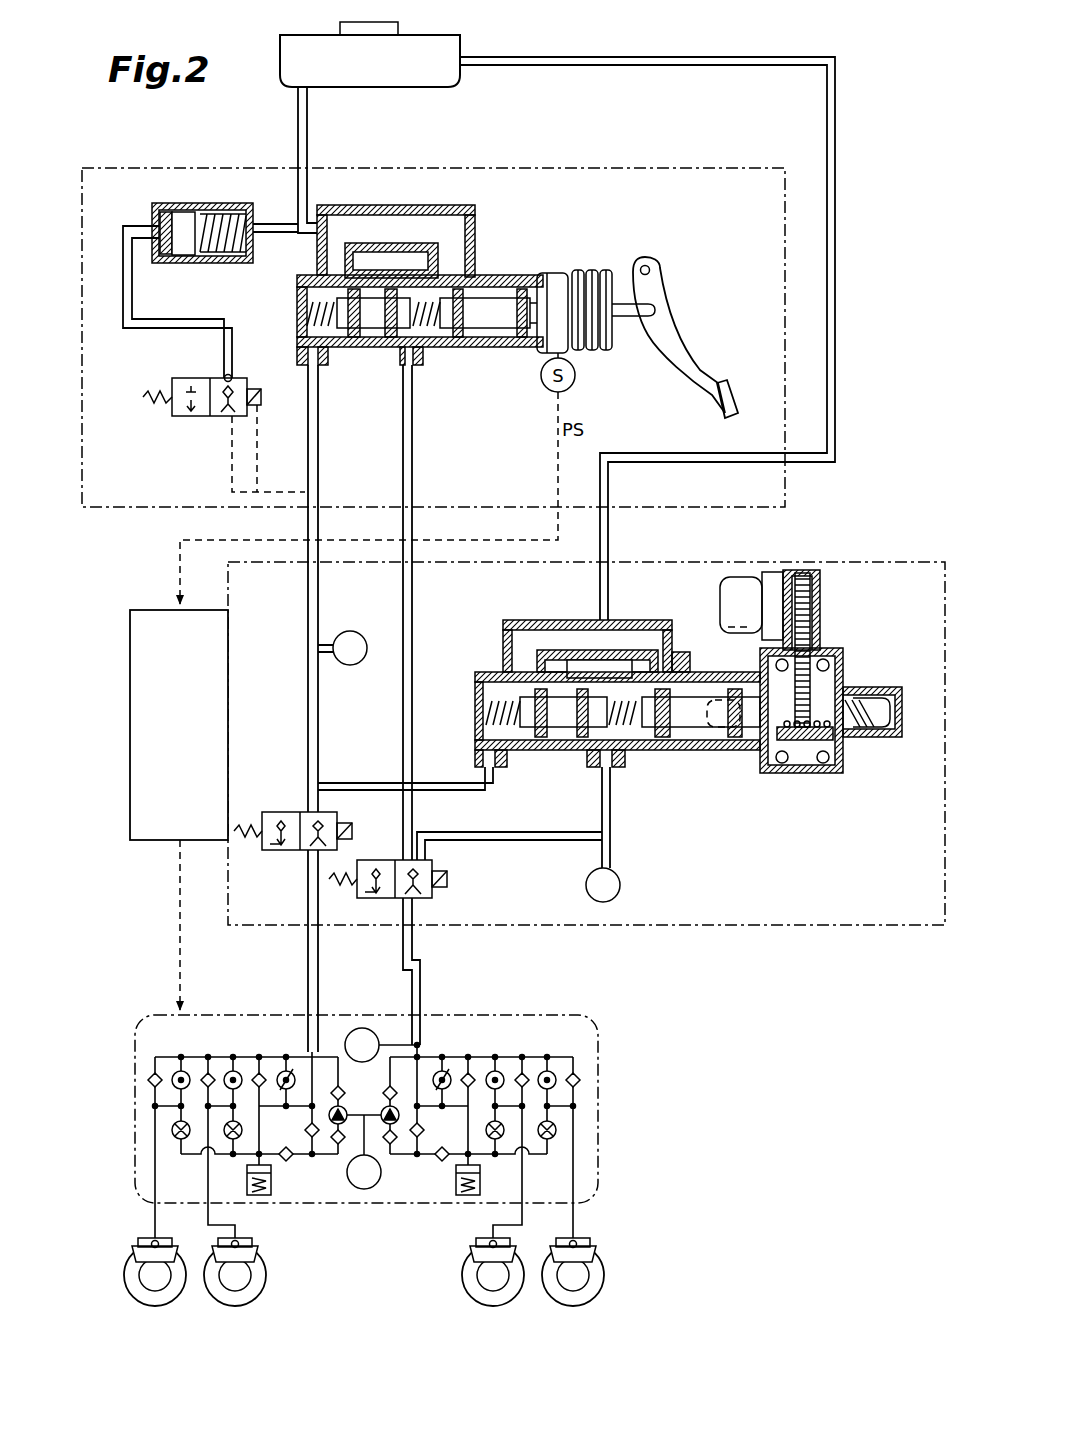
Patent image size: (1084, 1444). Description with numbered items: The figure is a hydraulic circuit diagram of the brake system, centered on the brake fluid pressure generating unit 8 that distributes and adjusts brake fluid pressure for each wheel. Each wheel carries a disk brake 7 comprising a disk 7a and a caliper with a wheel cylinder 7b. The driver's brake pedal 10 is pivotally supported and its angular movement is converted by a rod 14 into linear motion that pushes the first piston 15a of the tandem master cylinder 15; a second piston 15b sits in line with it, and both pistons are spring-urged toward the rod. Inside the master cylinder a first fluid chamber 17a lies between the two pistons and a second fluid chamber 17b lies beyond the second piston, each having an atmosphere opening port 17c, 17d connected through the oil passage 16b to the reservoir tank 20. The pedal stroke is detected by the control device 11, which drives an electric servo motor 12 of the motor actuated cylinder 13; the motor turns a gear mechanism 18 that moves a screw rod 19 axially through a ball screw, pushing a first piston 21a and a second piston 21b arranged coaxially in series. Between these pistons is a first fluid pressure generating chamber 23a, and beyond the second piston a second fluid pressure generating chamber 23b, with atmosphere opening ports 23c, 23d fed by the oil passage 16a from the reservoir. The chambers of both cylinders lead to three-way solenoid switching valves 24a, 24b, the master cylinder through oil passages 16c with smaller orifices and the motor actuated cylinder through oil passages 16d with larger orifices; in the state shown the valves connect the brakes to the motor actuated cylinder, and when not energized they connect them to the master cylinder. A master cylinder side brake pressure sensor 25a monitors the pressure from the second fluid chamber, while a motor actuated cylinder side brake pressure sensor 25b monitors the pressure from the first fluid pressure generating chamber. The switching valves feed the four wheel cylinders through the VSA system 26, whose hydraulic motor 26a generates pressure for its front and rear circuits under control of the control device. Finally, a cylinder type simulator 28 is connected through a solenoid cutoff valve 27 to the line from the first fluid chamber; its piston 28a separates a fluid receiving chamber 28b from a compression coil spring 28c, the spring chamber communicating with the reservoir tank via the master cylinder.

The disk brake 7 is at (364, 1280).
The disk 7a is at (124, 1262).
The wheel cylinder 7b is at (138, 1240).
The brake fluid pressure generating unit 8 is at (843, 476).
The brake pedal 10 is at (676, 336).
The control device 11 is at (130, 688).
The electric servo motor 12 is at (730, 593).
The motor actuated cylinder 13 is at (866, 636).
The rod 14 is at (622, 304).
The master cylinder 15 is at (436, 298).
The first piston 15a is at (505, 318).
The second piston 15b is at (368, 318).
The oil passage 16a is at (575, 66).
The oil passage 16b is at (310, 92).
The oil passages 16c is at (403, 614).
The oil passages 16d is at (463, 790).
The first fluid chamber 17a is at (440, 340).
The second fluid chamber 17b is at (310, 327).
The atmosphere opening port 17c is at (450, 263).
The atmosphere opening port 17d is at (330, 262).
The gear mechanism 18 is at (831, 586).
The screw rod 19 is at (870, 720).
The reservoir tank 20 is at (428, 33).
The first piston 21a is at (680, 728).
The second piston 21b is at (562, 728).
The first fluid pressure generating chamber 23a is at (630, 740).
The second fluid pressure generating chamber 23b is at (493, 688).
The atmosphere opening port 23c is at (640, 660).
The atmosphere opening port 23d is at (522, 660).
The solenoid switching valve 24a is at (421, 899).
The solenoid switching valve 24b is at (288, 851).
The master cylinder side brake pressure sensor 25a is at (348, 666).
The motor actuated cylinder side brake pressure sensor 25b is at (620, 885).
The VSA system 26 is at (160, 1013).
The hydraulic motor 26a is at (381, 1176).
The solenoid cutoff valve 27 is at (220, 379).
The simulator 28 is at (193, 244).
The piston 28a is at (183, 243).
The fluid receiving chamber 28b is at (162, 214).
The compression coil spring 28c is at (222, 262).